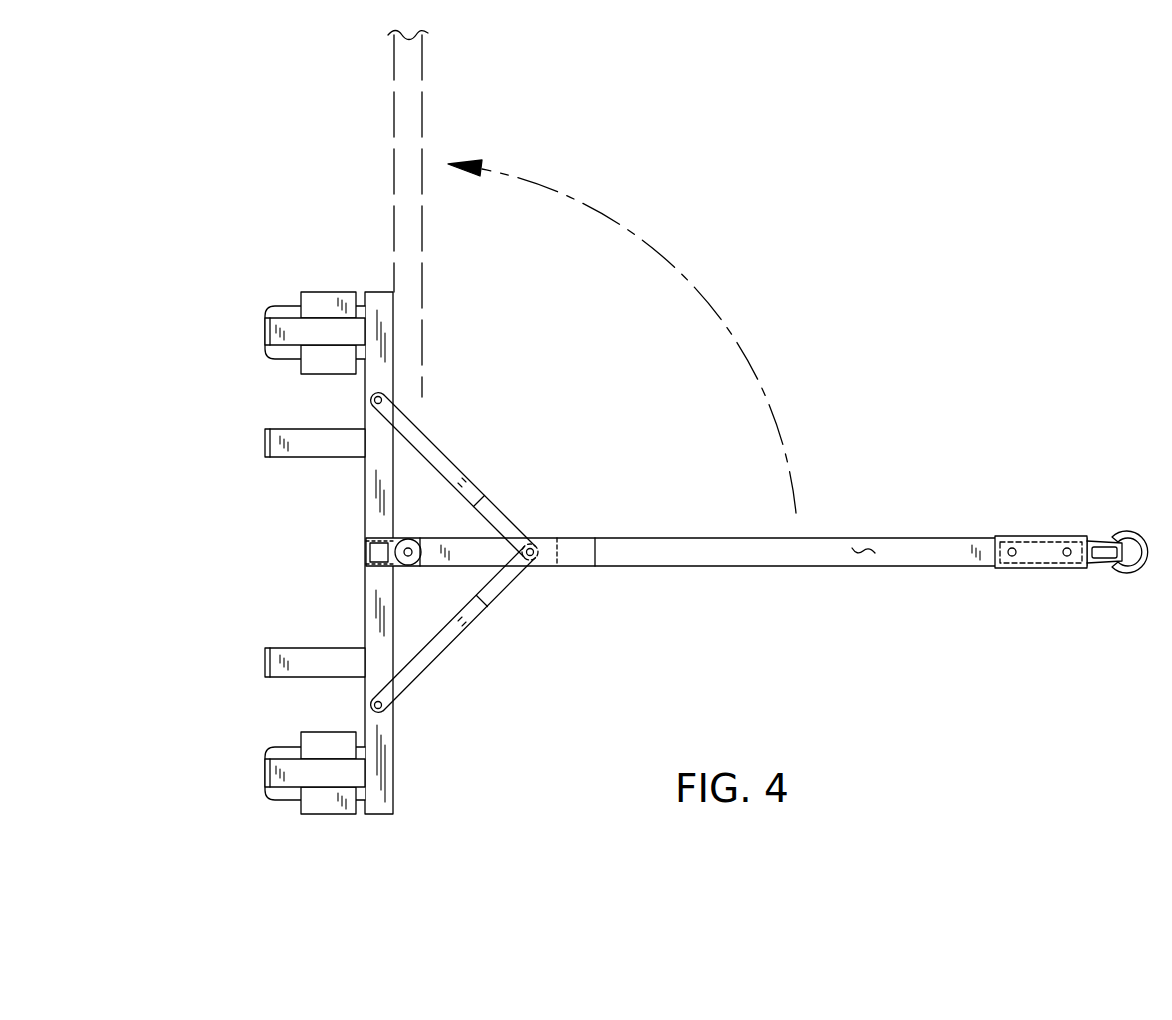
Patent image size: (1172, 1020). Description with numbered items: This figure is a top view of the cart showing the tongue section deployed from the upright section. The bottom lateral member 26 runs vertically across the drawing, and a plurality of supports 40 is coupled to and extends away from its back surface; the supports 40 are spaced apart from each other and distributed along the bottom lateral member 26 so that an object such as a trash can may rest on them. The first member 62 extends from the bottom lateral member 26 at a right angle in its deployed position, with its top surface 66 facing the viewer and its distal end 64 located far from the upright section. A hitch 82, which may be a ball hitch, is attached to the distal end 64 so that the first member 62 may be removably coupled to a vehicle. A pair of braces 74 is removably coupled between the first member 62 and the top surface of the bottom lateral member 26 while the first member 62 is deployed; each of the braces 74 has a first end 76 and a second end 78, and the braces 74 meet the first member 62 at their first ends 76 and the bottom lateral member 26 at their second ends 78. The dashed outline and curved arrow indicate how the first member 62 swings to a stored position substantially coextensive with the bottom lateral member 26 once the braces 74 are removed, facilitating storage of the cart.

The bottom lateral member 26 is at (365, 502).
The supports 40 is at (265, 330).
The first member 62 is at (743, 567).
The distal end 64 is at (995, 537).
The top surface 66 is at (863, 549).
The braces 74 is at (480, 502).
The first end 76 is at (535, 556).
The second end 78 is at (381, 710).
The hitch 82 is at (1073, 537).